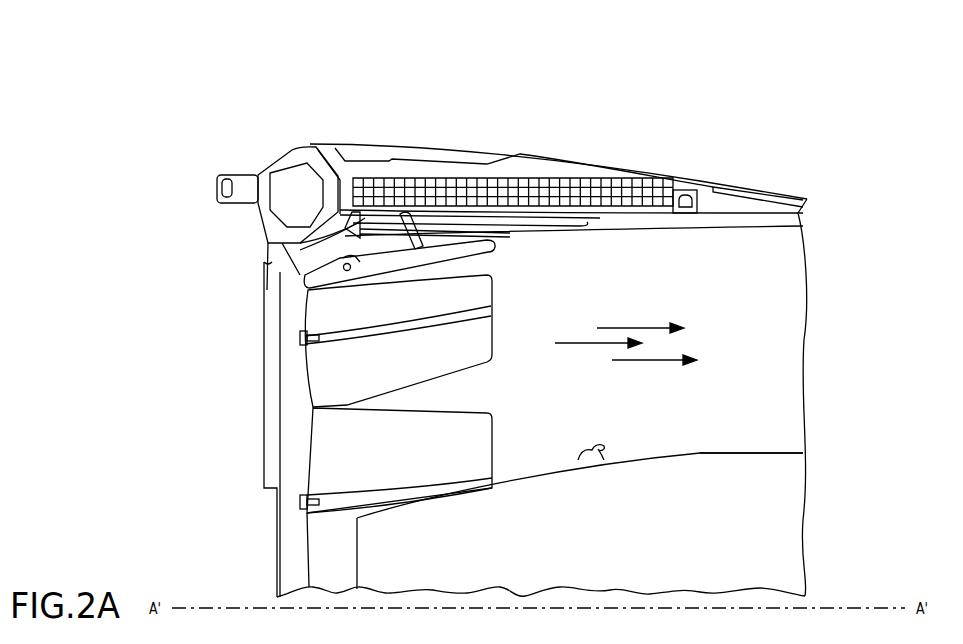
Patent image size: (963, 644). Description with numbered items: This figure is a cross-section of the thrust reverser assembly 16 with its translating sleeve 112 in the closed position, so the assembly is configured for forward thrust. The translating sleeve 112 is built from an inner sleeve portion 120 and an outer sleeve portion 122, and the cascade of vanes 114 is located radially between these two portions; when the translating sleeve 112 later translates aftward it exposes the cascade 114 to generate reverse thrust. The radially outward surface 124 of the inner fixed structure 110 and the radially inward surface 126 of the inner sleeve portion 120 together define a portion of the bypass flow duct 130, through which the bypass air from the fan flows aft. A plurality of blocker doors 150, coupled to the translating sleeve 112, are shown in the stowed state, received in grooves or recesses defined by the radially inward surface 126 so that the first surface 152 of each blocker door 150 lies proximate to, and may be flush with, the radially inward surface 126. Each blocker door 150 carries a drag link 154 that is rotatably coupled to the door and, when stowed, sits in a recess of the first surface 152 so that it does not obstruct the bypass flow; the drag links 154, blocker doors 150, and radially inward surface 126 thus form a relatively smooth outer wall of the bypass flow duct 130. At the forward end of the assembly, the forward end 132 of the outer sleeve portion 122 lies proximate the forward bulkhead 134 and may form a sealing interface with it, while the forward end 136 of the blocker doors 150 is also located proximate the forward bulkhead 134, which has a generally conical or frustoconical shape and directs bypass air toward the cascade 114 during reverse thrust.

The thrust reverser assembly 16 is at (428, 70).
The inner fixed structure 110 is at (673, 485).
The translating sleeve 112 is at (718, 95).
The cascade of vanes 114 is at (517, 182).
The inner sleeve portion 120 is at (730, 222).
The outer sleeve portion 122 is at (683, 190).
The radially outward surface 124 is at (762, 452).
The radially inward surface 126 is at (726, 301).
The bypass flow duct 130 is at (777, 343).
The forward end 132 is at (305, 148).
The forward bulkhead 134 is at (262, 175).
The forward end 136 is at (305, 362).
The blocker door 150 is at (443, 258).
The first surface 152 is at (391, 317).
The drag link 154 is at (468, 316).